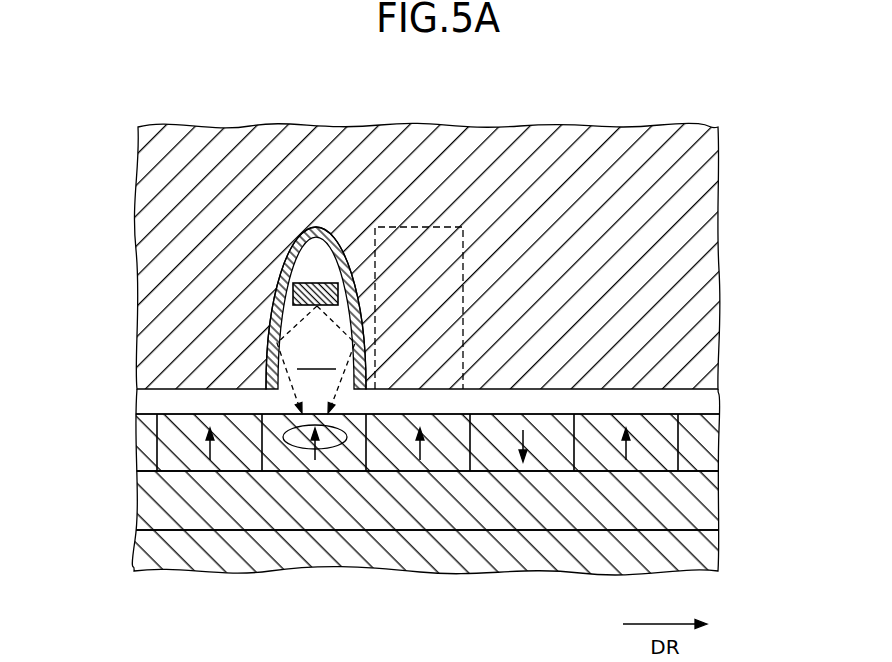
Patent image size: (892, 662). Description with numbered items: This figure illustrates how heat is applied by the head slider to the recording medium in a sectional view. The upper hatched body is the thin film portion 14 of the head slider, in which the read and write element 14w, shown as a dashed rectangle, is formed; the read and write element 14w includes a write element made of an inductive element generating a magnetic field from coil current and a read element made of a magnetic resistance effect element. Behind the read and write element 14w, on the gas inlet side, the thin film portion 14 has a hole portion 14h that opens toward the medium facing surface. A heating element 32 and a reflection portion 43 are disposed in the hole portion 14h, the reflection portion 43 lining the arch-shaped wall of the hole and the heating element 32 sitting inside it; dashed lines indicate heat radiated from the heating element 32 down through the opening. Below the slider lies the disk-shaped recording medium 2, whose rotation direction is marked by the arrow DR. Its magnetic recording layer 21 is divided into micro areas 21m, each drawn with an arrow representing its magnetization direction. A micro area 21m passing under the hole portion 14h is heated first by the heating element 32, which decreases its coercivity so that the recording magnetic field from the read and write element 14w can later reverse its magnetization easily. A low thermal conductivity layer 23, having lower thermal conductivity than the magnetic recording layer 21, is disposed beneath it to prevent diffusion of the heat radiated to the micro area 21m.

The thin film portion 14 is at (196, 148).
The read and write element 14w is at (432, 227).
The hole portion 14h is at (316, 325).
The heating element 32 is at (293, 293).
The reflection portion 43 is at (265, 327).
The magnetic recording layer 21 is at (697, 450).
The micro area 21m is at (338, 458).
The low thermal conductivity layer 23 is at (697, 509).
The disk-shaped recording medium 2 is at (185, 547).